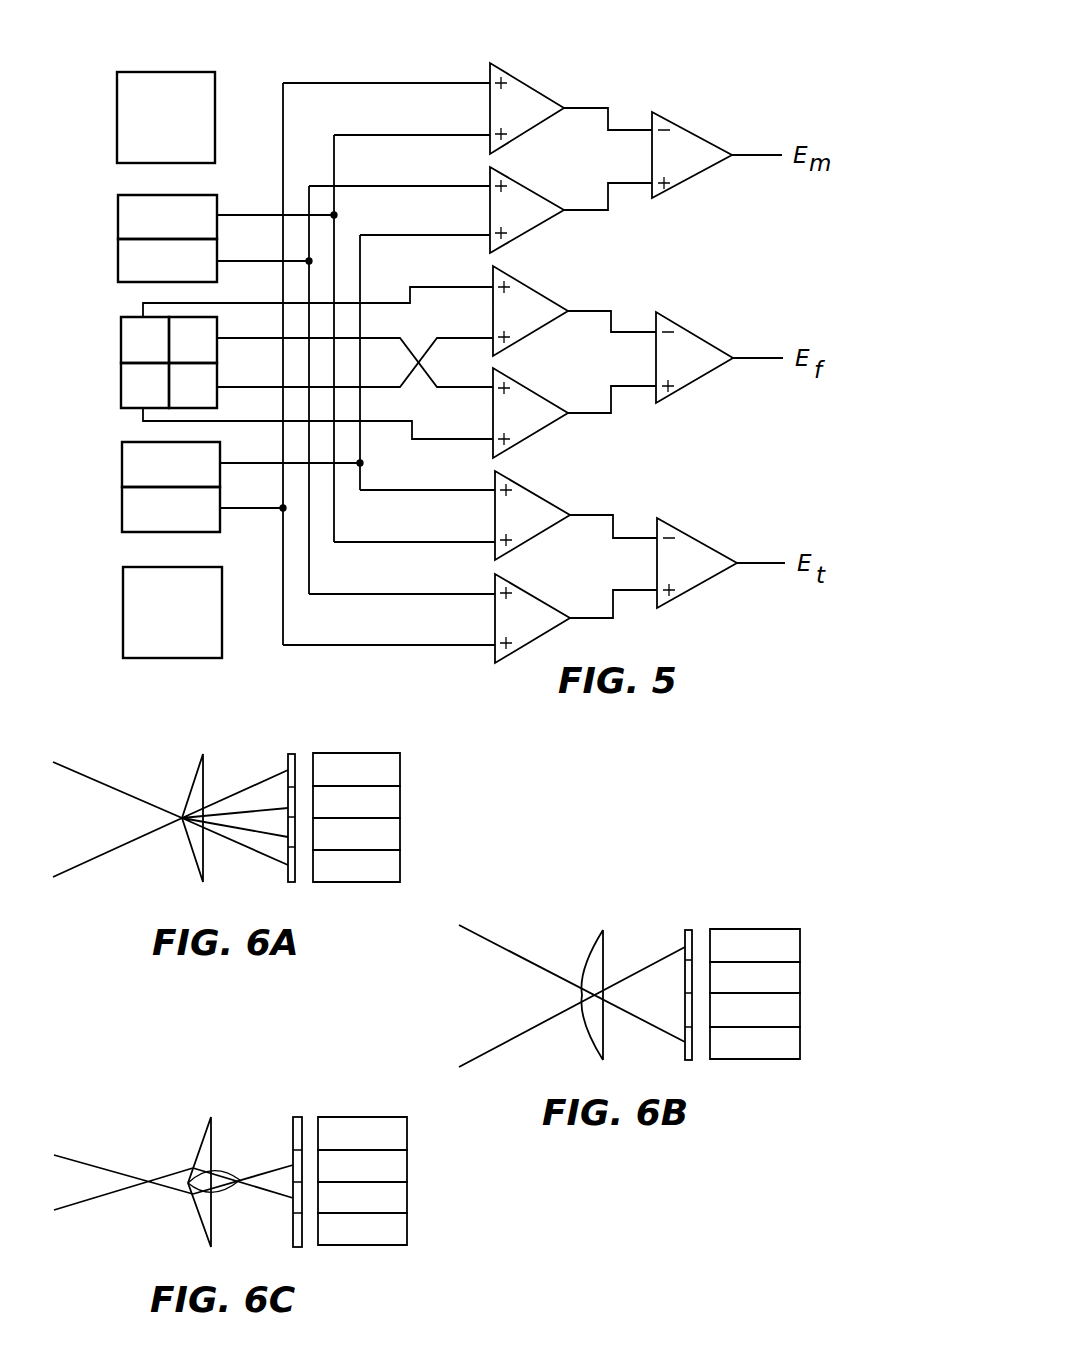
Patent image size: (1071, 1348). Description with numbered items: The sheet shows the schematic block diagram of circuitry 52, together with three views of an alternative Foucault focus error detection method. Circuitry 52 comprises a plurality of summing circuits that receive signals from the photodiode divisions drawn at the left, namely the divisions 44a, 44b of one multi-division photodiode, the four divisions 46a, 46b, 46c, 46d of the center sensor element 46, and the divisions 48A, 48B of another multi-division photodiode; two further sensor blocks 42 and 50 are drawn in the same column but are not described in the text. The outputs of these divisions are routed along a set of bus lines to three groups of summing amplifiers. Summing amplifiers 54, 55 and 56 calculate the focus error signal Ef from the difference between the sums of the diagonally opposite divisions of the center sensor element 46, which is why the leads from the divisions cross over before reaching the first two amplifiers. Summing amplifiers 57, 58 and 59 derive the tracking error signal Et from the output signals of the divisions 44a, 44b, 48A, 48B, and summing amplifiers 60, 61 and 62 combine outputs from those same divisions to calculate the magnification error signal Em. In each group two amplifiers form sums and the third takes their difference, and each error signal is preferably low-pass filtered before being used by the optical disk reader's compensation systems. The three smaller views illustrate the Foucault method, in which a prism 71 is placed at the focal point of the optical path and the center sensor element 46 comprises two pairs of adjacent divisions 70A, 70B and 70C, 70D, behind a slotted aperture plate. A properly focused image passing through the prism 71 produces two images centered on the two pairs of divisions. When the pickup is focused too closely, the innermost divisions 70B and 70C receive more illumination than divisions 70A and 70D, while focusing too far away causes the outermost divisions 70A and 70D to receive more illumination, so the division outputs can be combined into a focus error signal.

In FIG. 5, the detector / sensor block 42 is at (172, 612).
In FIG. 5, the photodiode division 44a is at (204, 509).
In FIG. 5, the photodiode division 44b is at (242, 464).
In FIG. 6A, the center sensor element 46 is at (291, 753).
In FIG. 6B, the center sensor element 46 is at (733, 929).
In FIG. 6C, the center sensor element 46 is at (303, 1117).
In FIG. 5, the photodiode division 46a is at (307, 401).
In FIG. 5, the photodiode division 46b is at (307, 325).
In FIG. 5, the photodiode division 46c is at (331, 352).
In FIG. 5, the photodiode division 46d is at (331, 373).
In FIG. 5, the photodiode division 48A is at (215, 260).
In FIG. 5, the photodiode division 48B is at (227, 217).
In FIG. 5, the detector block 50 is at (166, 117).
In FIG. 5, the circuitry 52 is at (670, 68).
In FIG. 5, the summing amplifier 54 is at (536, 288).
In FIG. 5, the summing amplifier 55 is at (536, 391).
In FIG. 5, the summing amplifier 56 is at (702, 333).
In FIG. 5, the summing amplifier 57 is at (538, 492).
In FIG. 5, the summing amplifier 58 is at (538, 596).
In FIG. 5, the summing amplifier 59 is at (704, 540).
In FIG. 5, the summing amplifier 60 is at (533, 85).
In FIG. 5, the summing amplifier 61 is at (533, 188).
In FIG. 5, the summing amplifier 62 is at (698, 130).
In FIG. 6A, the sensor element division 70A is at (400, 766).
In FIG. 6B, the sensor element division 70A is at (800, 943).
In FIG. 6C, the sensor element division 70A is at (407, 1131).
In FIG. 6A, the sensor element division 70B is at (400, 797).
In FIG. 6B, the sensor element division 70B is at (800, 975).
In FIG. 6C, the sensor element division 70B is at (407, 1163).
In FIG. 6A, the sensor element division 70C is at (400, 830).
In FIG. 6B, the sensor element division 70C is at (800, 1008).
In FIG. 6C, the sensor element division 70C is at (407, 1196).
In FIG. 6A, the sensor element division 70D is at (400, 864).
In FIG. 6B, the sensor element division 70D is at (800, 1043).
In FIG. 6C, the sensor element division 70D is at (407, 1230).
In FIG. 6A, the prism 71 is at (207, 775).
In FIG. 6B, the prism 71 is at (583, 987).
In FIG. 6C, the prism 71 is at (197, 1150).